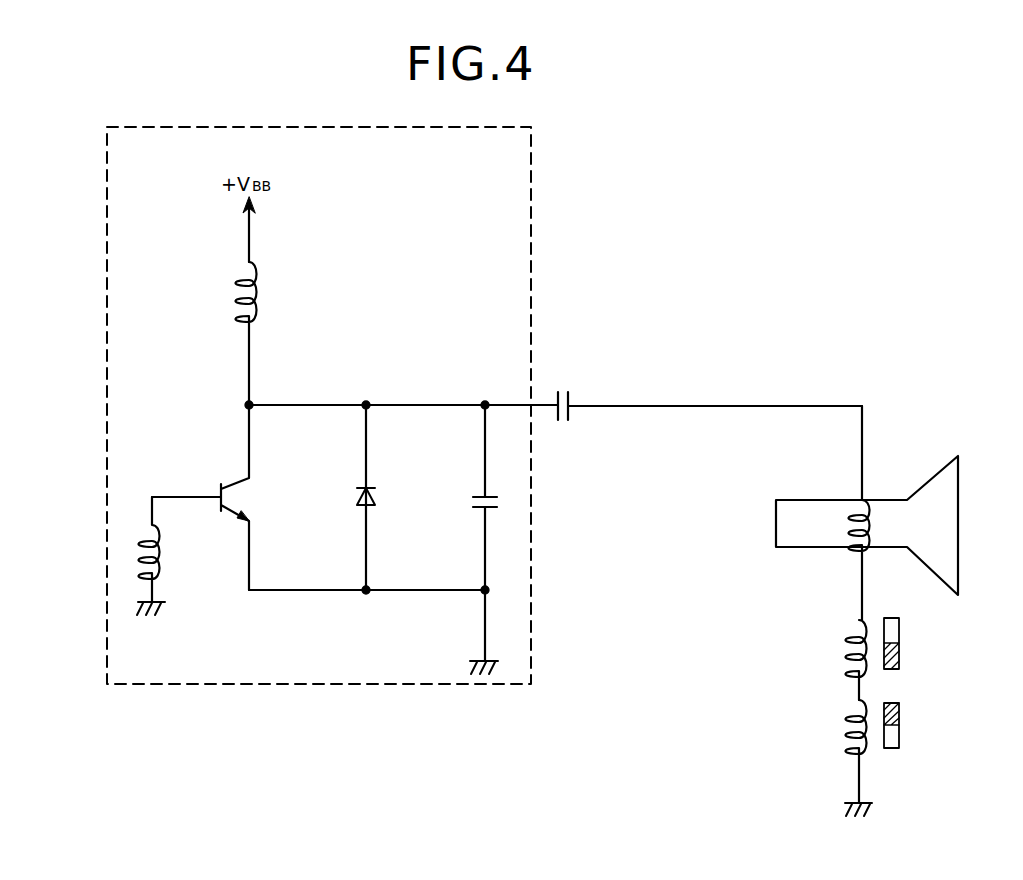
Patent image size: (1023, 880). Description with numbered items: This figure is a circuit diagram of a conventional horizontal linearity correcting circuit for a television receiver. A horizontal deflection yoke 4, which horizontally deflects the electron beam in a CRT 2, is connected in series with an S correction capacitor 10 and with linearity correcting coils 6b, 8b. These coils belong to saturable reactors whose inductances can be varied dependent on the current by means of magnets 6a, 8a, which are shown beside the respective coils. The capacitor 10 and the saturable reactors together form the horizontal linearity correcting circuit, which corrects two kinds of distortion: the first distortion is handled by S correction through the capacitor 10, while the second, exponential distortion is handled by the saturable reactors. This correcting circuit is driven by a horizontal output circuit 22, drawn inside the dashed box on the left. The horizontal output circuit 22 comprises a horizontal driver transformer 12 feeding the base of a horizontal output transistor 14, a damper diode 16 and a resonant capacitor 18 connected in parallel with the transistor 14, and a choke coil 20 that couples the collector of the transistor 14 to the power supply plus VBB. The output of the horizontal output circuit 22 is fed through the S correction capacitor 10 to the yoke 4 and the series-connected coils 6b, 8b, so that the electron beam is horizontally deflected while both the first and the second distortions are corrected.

The CRT 2 is at (960, 528).
The horizontal deflection yoke 4 is at (868, 512).
The magnet 6a is at (899, 650).
The linearity correcting coil 6b is at (872, 622).
The magnet 8a is at (899, 727).
The linearity correcting coil 8b is at (862, 698).
The S correction capacitor 10 is at (563, 390).
The horizontal driver transformer 12 is at (146, 525).
The horizontal output transistor 14 is at (233, 495).
The damper diode 16 is at (375, 488).
The resonant capacitor 18 is at (475, 512).
The choke coil 20 is at (258, 297).
The horizontal output circuit 22 is at (534, 220).